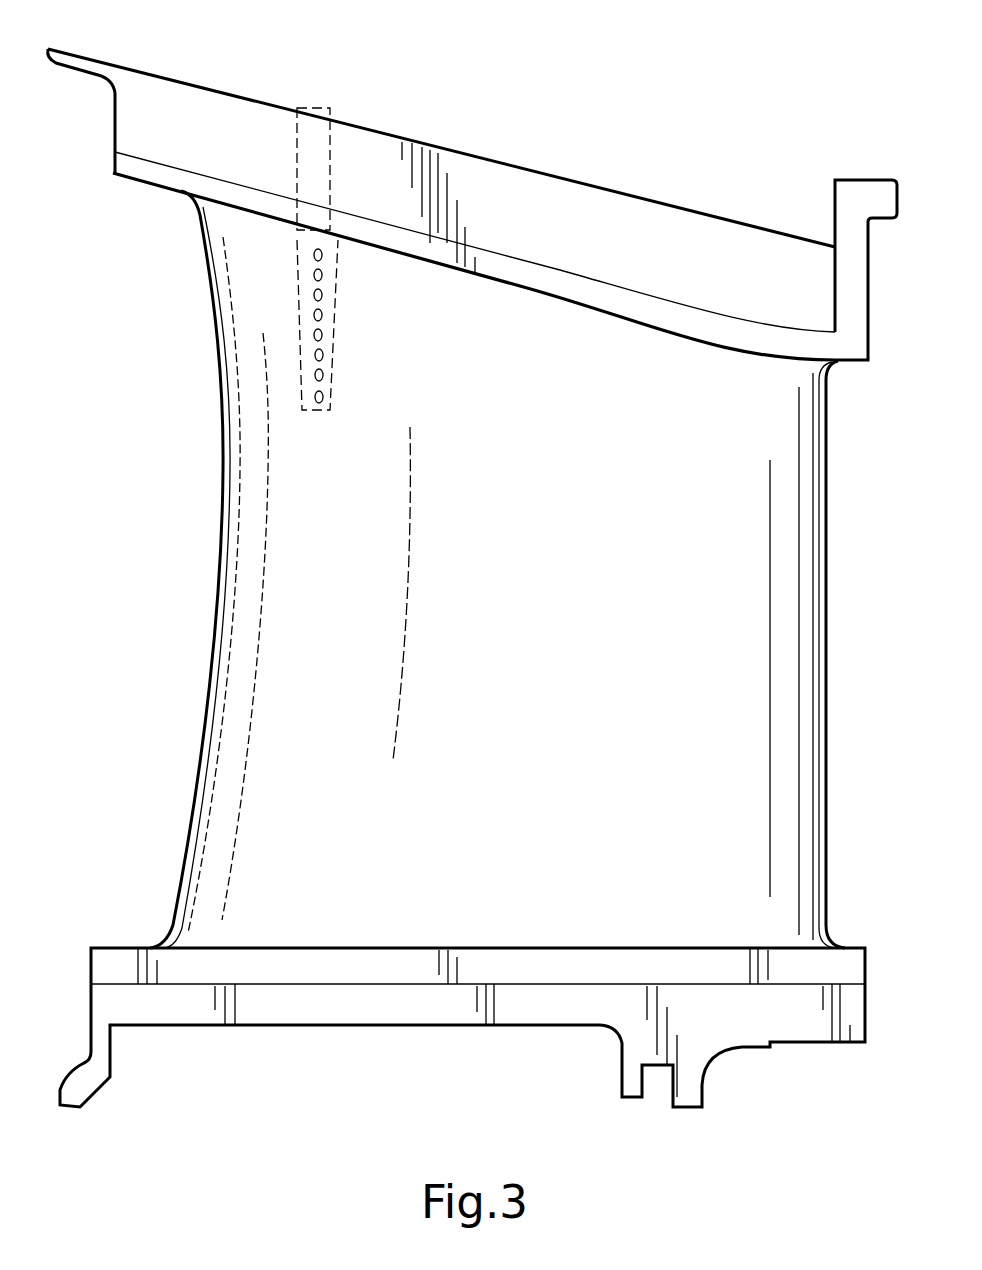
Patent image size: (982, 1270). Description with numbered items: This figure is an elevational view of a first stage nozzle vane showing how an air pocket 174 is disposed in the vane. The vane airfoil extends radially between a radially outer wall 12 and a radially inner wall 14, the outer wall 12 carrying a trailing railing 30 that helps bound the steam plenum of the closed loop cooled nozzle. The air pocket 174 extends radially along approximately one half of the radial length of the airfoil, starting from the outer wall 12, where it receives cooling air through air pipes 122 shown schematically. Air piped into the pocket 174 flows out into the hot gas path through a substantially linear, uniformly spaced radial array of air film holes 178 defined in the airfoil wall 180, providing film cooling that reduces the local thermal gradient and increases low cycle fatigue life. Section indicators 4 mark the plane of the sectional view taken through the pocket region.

The outer wall 12 is at (164, 187).
The inner wall 14 is at (118, 946).
The trailing railing 30 is at (850, 233).
The air pipes 122 is at (332, 150).
The air pocket 174 is at (300, 297).
The air film holes 178 is at (322, 335).
The airfoil wall 180 is at (308, 779).
The section line 4- 4 is at (167, 360).